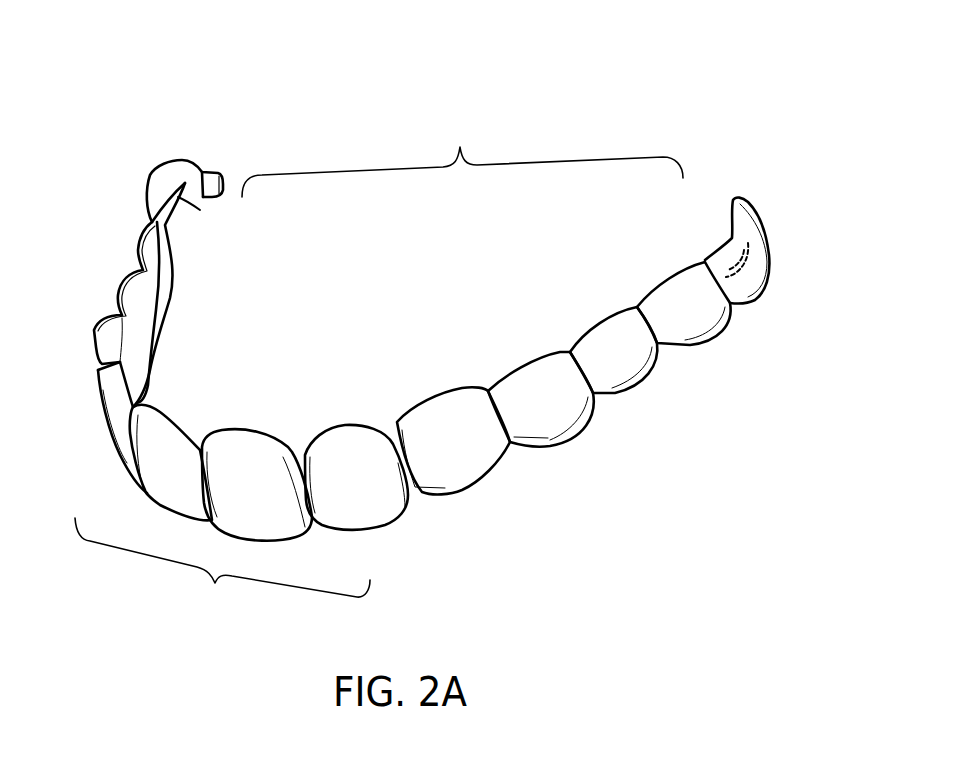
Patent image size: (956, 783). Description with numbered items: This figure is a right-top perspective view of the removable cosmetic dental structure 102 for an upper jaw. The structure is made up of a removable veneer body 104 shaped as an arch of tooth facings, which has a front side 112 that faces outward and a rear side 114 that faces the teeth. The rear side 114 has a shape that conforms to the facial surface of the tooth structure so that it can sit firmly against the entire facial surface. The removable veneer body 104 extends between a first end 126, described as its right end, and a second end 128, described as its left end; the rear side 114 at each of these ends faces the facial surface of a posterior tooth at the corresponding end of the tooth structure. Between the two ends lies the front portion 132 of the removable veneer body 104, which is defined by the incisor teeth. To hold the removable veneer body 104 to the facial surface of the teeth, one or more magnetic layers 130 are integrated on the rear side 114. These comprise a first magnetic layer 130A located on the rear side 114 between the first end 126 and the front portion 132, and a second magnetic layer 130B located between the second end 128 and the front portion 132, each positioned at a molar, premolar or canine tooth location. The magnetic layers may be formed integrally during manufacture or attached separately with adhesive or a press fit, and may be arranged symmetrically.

The removable cosmetic dental structure 102 is at (442, 335).
The removable veneer body 104 is at (238, 424).
The front side 112 is at (160, 487).
The rear side 114 is at (157, 265).
The first end 126 is at (221, 152).
The second end 128 is at (753, 190).
The magnetic layers 130 is at (460, 147).
The first magnetic layer 130A is at (177, 196).
The second magnetic layer 130B is at (737, 256).
The front portion 132 is at (215, 583).